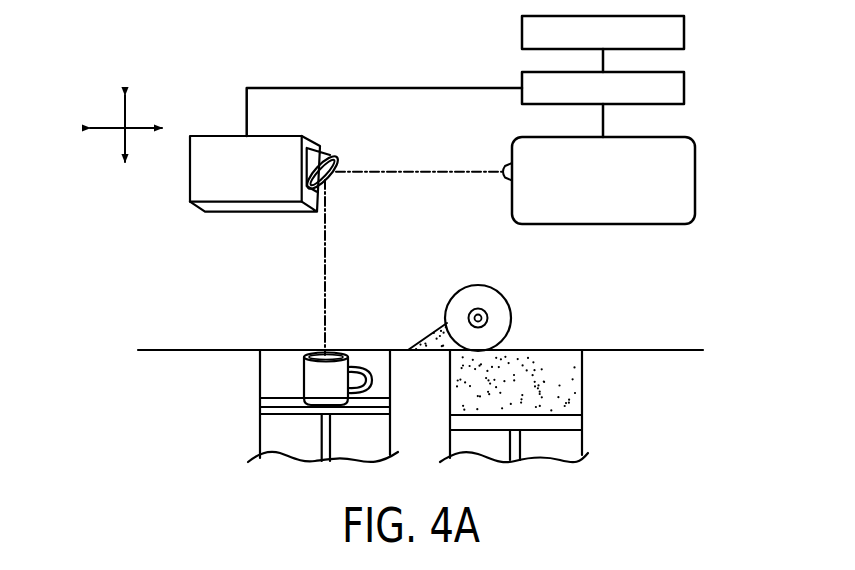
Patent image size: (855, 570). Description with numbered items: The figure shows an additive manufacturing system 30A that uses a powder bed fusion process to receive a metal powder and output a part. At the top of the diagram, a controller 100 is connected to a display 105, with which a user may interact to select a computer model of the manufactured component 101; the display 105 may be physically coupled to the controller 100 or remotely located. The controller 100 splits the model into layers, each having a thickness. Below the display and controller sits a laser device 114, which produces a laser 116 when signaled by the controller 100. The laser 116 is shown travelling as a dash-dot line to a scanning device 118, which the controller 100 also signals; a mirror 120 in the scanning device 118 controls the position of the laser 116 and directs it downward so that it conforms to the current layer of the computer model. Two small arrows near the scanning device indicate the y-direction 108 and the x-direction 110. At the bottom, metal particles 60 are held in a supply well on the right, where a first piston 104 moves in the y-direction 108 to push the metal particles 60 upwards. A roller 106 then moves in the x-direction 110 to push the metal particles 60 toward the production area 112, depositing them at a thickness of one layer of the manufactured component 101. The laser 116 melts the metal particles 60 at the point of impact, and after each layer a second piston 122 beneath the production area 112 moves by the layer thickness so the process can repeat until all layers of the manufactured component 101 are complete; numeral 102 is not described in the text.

The additive manufacturing system 30A is at (158, 54).
The scanning device 118 is at (225, 135).
The mirror 120 is at (328, 150).
The laser 116 is at (414, 170).
The laser device 114 is at (695, 178).
The controller 100 is at (684, 85).
The display 105 is at (684, 28).
The x-direction 110 is at (113, 128).
The y-direction 108 is at (120, 141).
The production area 112 is at (299, 321).
The second piston 122 is at (318, 433).
The manufactured component 101 is at (342, 383).
The powder supply area 102 is at (584, 305).
The metal particles 60 is at (513, 370).
The first piston 104 is at (520, 442).
The roller 106 is at (500, 293).